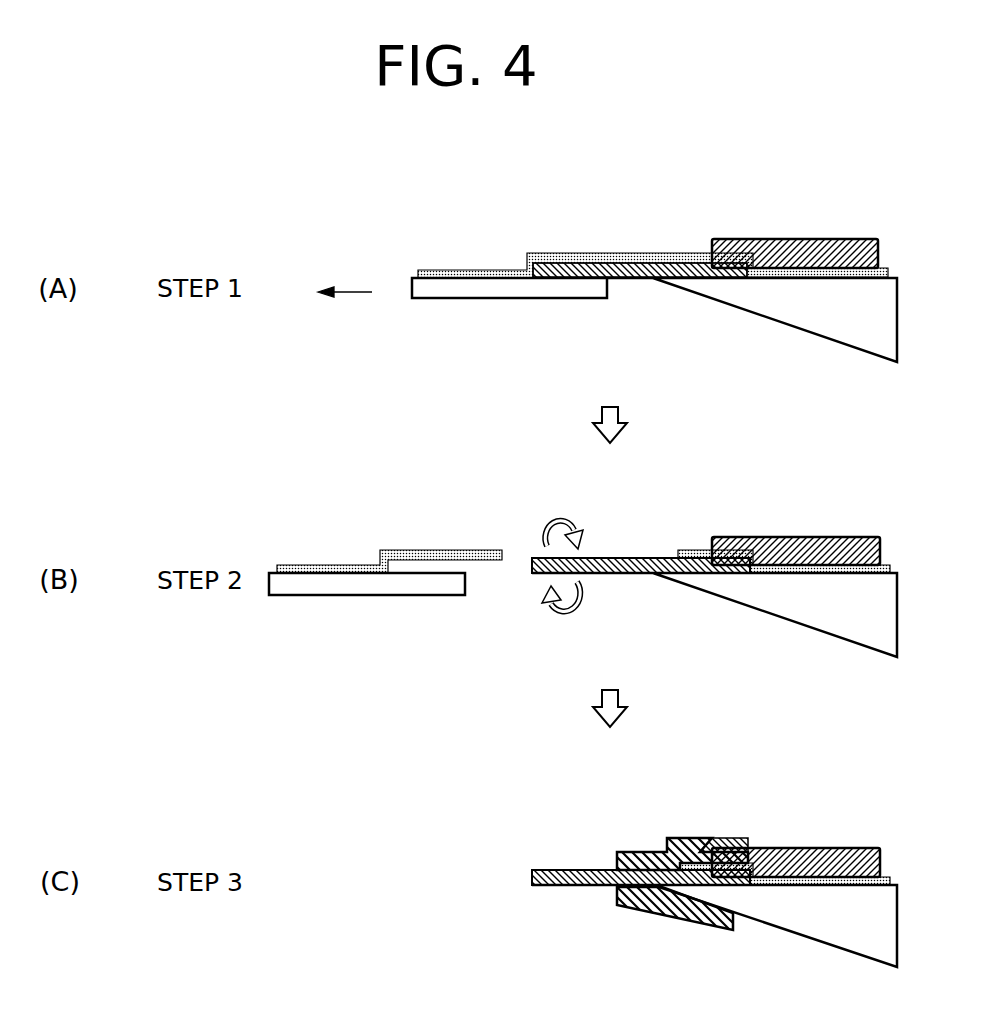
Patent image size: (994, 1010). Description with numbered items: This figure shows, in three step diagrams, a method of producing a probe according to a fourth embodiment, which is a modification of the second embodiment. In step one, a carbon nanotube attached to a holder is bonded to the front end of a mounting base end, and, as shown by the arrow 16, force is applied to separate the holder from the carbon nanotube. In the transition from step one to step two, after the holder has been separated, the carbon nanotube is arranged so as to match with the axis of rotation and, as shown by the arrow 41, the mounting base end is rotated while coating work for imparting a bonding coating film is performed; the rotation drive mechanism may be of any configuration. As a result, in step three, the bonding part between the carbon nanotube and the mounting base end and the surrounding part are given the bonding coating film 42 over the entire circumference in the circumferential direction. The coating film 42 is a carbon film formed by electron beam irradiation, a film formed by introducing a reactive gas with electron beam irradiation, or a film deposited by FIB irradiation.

The arrow 16 is at (352, 291).
The arrow 41 is at (546, 525).
The bonding coating film 42 is at (681, 841).